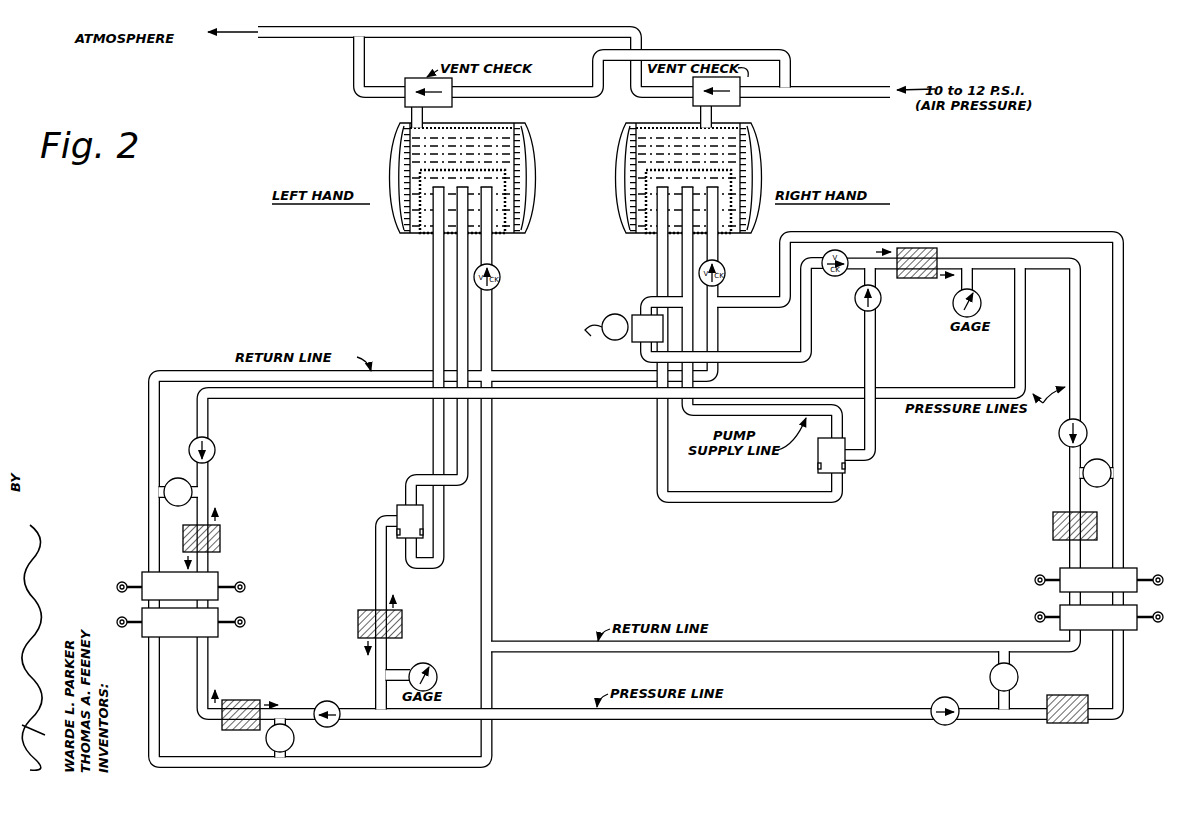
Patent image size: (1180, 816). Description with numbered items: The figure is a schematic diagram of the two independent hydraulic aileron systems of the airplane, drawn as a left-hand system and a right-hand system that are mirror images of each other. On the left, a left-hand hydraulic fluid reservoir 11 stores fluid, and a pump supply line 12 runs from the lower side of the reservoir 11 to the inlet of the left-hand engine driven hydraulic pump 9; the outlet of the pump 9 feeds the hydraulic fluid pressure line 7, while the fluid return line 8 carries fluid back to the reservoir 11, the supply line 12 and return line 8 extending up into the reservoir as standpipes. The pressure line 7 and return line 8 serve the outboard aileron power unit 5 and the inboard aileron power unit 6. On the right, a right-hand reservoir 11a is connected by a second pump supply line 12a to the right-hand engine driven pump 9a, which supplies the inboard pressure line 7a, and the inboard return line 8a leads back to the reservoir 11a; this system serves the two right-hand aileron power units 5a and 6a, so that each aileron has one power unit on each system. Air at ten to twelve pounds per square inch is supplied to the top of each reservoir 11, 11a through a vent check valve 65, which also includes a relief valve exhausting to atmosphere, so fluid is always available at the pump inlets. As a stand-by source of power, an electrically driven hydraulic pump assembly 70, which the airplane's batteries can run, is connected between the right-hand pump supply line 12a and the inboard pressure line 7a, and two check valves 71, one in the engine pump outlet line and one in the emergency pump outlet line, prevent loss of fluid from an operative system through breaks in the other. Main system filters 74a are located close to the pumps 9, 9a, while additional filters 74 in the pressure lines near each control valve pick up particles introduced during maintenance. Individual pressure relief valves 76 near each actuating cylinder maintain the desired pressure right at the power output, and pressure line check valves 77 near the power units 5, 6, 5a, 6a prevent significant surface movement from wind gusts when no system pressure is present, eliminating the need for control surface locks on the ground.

The outboard aileron power unit 5 is at (218, 634).
The right-hand aileron power unit 5a is at (1058, 608).
The inboard aileron power unit 6 is at (218, 597).
The right-hand aileron power unit 6a is at (1058, 570).
The hydraulic fluid pressure line 7 is at (380, 724).
The inboard pressure line 7a is at (208, 413).
The fluid return line 8 is at (494, 312).
The inboard return line 8a is at (718, 343).
The left-hand hydraulic pump 9 is at (396, 507).
The right-hand engine driven pump 9a is at (848, 461).
The left-hand hydraulic fluid reservoir 11 is at (531, 143).
The right-hand reservoir 11a is at (615, 146).
The pump supply line 12 is at (456, 416).
The second pump supply line 12a is at (708, 418).
The vent check valve 65 is at (452, 104).
The electrically driven hydraulic pump assembly 70 is at (640, 314).
The check valve 71 is at (855, 299).
The filter 74 is at (221, 538).
The main system filter 74a is at (400, 616).
The pressure relief valve 76 is at (183, 479).
The pressure line check valve 77 is at (215, 449).